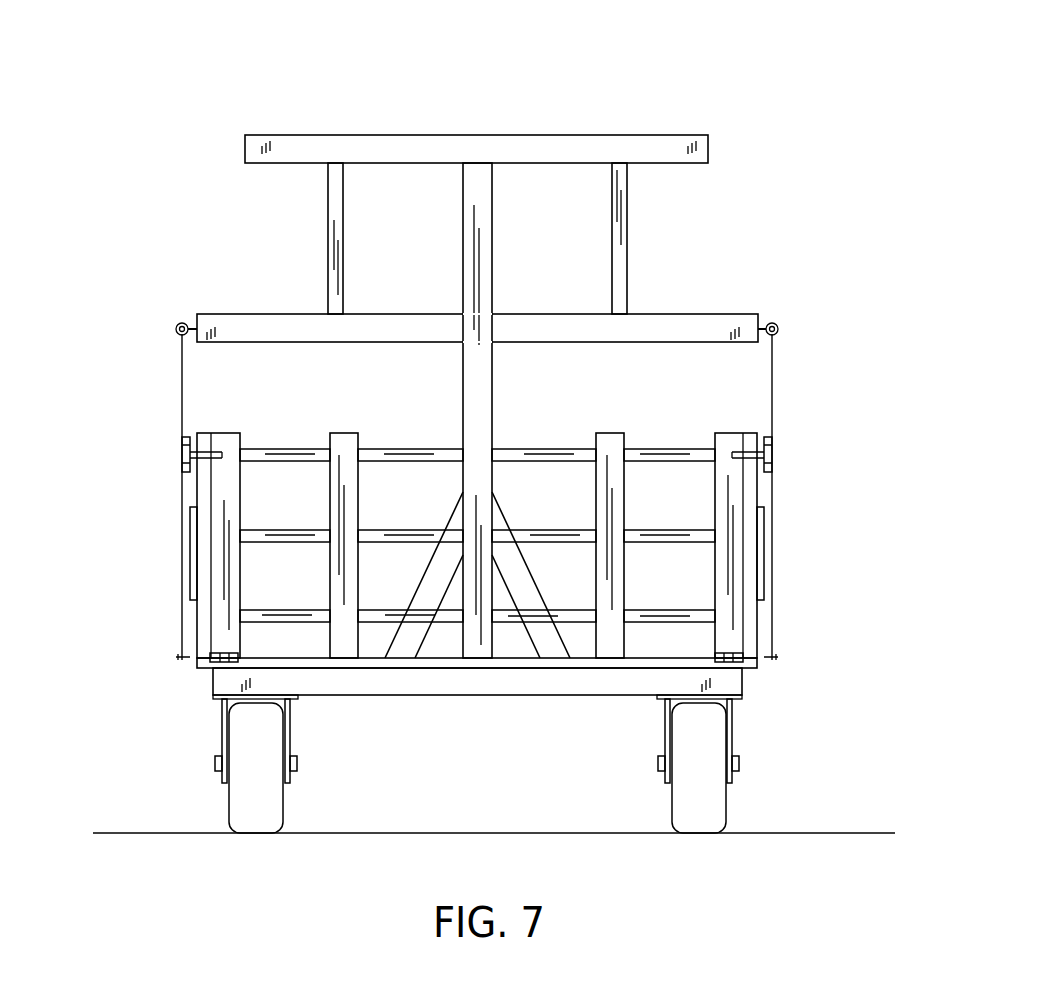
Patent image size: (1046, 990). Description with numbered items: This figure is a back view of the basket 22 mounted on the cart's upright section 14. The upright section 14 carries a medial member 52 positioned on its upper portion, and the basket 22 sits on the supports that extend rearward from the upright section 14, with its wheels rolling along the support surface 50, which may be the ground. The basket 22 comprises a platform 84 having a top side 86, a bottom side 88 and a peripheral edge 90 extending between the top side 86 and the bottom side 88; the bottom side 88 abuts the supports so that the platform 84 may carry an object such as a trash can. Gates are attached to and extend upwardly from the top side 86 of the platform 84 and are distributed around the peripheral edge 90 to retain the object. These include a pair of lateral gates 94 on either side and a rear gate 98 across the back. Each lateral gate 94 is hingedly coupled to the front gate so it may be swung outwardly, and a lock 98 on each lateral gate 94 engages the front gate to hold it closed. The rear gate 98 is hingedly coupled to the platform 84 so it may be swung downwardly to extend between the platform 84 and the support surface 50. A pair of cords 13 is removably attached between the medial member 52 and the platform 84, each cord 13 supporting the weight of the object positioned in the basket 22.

The cord 13 is at (182, 350).
The upright section 14 is at (552, 112).
The basket 22 is at (224, 420).
The support surface 50 is at (143, 833).
The medial member 52 is at (735, 314).
The platform 84 is at (286, 657).
The top side 86 is at (684, 657).
The bottom side 88 is at (446, 668).
The peripheral edge 90 is at (560, 660).
The lateral gate 94 is at (207, 493).
The rear gate 98 is at (182, 455).